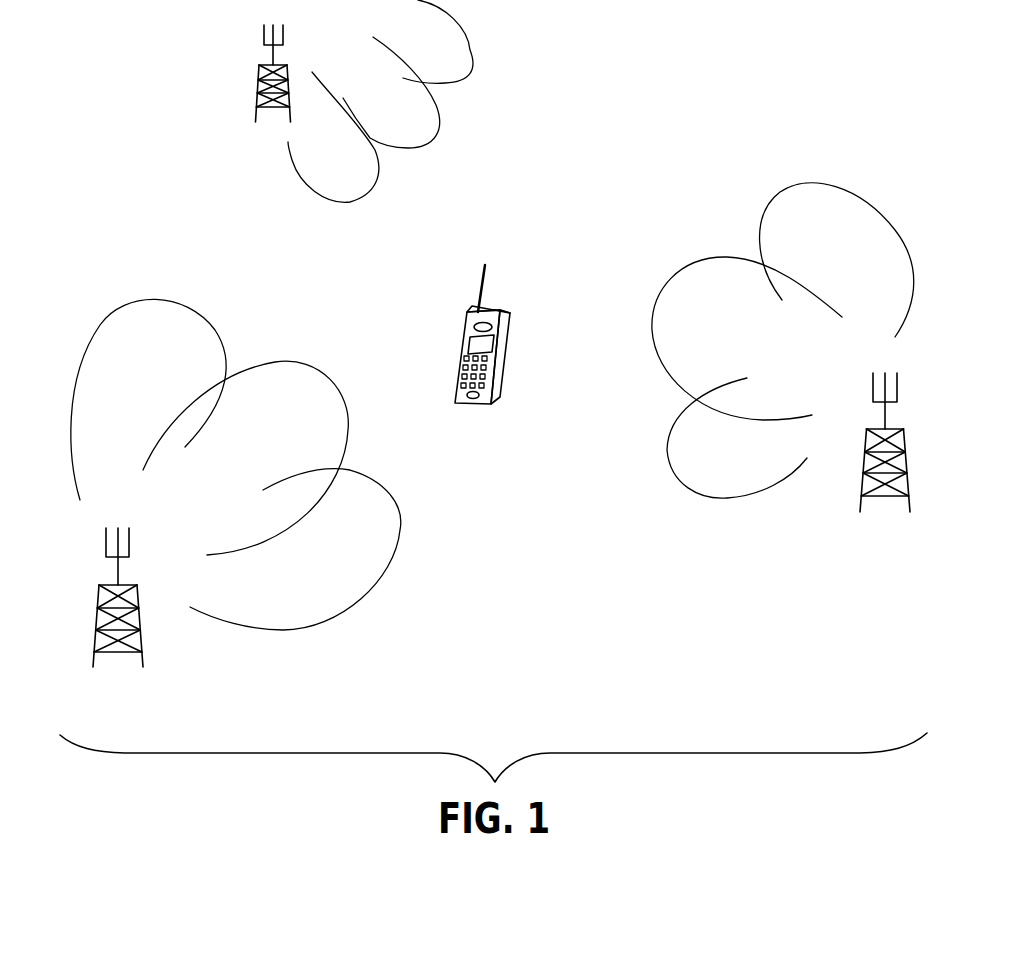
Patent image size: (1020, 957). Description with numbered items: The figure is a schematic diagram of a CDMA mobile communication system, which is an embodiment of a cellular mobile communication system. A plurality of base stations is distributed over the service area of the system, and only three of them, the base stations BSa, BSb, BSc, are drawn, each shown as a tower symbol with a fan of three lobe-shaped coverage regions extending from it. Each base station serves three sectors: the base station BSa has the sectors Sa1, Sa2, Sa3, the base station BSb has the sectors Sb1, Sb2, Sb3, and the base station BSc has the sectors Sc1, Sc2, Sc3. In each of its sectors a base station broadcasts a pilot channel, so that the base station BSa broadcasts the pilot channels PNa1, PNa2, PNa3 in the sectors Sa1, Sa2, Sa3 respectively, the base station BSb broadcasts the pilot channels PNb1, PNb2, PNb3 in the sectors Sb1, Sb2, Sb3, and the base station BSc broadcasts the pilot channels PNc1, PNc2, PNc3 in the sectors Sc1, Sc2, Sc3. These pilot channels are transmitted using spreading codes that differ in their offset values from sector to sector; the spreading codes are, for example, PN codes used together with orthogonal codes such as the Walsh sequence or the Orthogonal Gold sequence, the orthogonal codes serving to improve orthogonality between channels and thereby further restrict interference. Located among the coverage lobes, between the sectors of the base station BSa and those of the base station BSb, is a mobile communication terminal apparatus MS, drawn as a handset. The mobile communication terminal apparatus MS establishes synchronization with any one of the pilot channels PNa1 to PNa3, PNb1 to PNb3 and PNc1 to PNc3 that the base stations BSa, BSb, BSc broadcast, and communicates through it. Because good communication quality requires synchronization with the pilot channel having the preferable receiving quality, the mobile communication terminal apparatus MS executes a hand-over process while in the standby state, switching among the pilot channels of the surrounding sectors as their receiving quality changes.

The base station BSa is at (117, 662).
The base station BSb is at (885, 505).
The base station BSc is at (270, 122).
The mobile communication terminal apparatus MS is at (480, 405).
The sector Sa1 is at (328, 549).
The sector Sa2 is at (245, 433).
The sector Sa3 is at (148, 371).
The sector Sb1 is at (833, 232).
The sector Sb2 is at (744, 319).
The sector Sb3 is at (727, 457).
The sector Sc1 is at (446, 41).
The sector Sc2 is at (421, 98).
The sector Sc3 is at (362, 144).
The pilot channel PNa1 is at (295, 549).
The pilot channel PNa2 is at (245, 458).
The pilot channel PNa3 is at (148, 399).
The pilot channel PNb1 is at (837, 260).
The pilot channel PNb2 is at (670, 252).
The pilot channel PNb3 is at (667, 507).
The pilot channel PNc1 is at (486, 22).
The pilot channel PNc2 is at (458, 137).
The pilot channel PNc3 is at (395, 197).